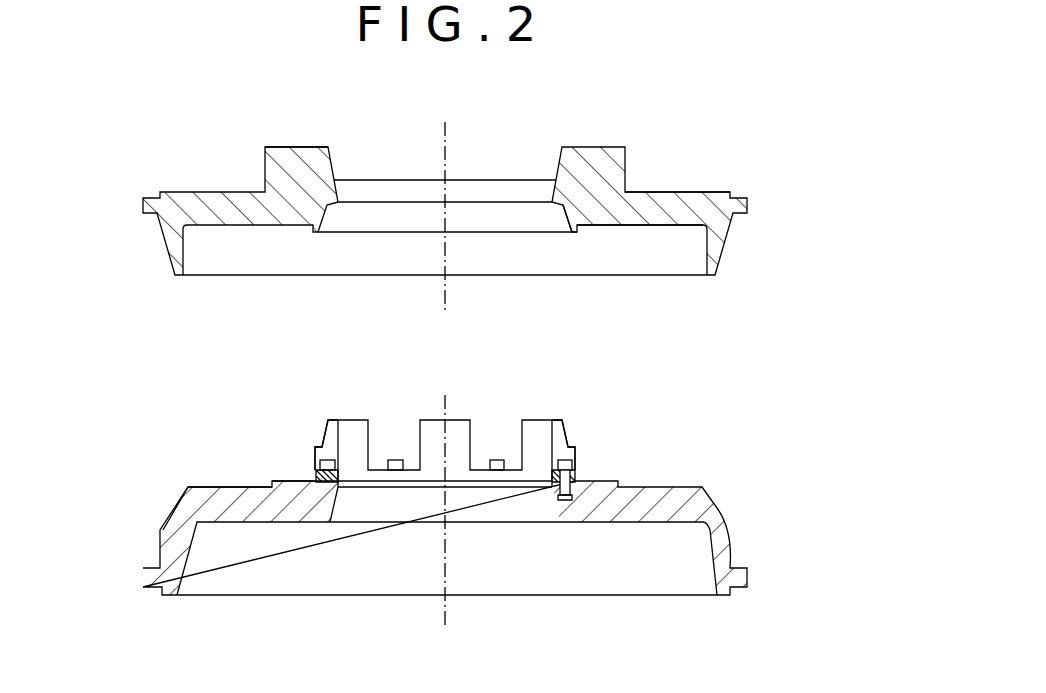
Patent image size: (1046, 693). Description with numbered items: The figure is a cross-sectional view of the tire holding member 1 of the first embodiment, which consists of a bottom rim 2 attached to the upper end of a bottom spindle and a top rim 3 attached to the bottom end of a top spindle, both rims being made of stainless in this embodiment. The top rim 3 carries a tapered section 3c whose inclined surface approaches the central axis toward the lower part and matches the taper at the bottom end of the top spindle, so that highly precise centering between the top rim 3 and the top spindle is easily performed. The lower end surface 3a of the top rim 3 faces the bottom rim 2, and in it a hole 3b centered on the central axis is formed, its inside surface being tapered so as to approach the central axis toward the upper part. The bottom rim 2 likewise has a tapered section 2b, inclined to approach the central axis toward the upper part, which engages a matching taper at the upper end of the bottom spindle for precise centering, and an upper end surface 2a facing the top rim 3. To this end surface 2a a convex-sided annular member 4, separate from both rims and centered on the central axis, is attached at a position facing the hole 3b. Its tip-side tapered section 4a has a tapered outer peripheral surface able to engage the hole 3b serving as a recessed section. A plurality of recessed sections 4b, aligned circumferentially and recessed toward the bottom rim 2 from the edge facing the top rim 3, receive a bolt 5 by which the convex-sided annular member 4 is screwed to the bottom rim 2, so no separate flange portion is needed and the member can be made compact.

The tire holding member 1 is at (725, 118).
The bottom rim 2 is at (172, 521).
The end surface 2a is at (218, 487).
The tapered section 2b is at (338, 503).
The top rim 3 is at (721, 233).
The end surface 3a is at (645, 228).
The hole 3b is at (565, 218).
The tapered section 3c is at (340, 147).
The convex-sided annular member 4 is at (428, 425).
The tapered section 4a is at (325, 435).
The recessed sections 4b is at (517, 443).
The bolt 5 is at (568, 490).